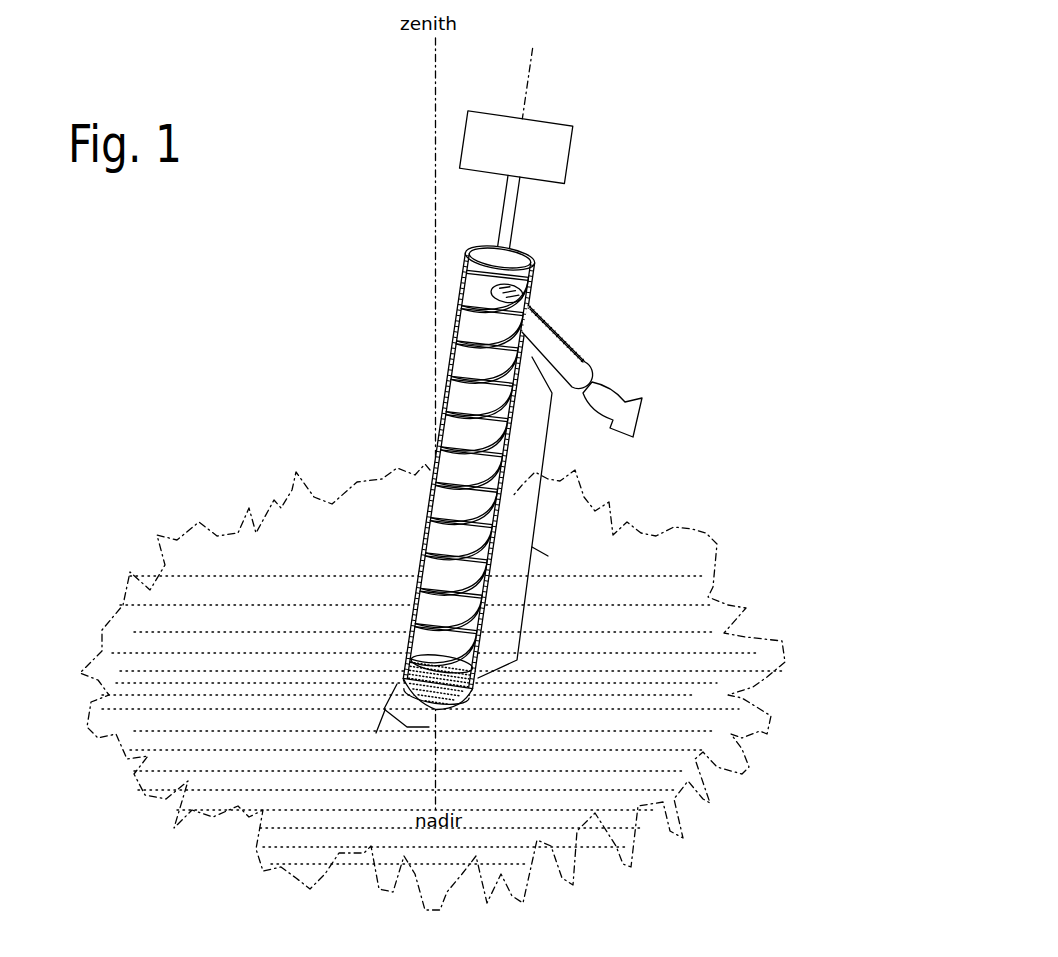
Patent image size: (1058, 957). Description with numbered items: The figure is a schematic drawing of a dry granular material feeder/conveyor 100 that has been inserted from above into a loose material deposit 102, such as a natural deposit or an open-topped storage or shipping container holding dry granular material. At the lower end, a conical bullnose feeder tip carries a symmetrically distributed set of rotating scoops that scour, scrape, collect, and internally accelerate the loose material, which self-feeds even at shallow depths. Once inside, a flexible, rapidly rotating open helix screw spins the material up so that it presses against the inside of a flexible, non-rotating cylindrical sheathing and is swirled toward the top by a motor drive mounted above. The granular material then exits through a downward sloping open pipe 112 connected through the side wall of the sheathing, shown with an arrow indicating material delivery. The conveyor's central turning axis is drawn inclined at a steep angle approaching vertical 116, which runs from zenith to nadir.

The feeder/conveyor 100 is at (345, 308).
The loose material deposit 102 is at (272, 689).
The open pipe 112 is at (607, 365).
The vertical 116 is at (435, 114).